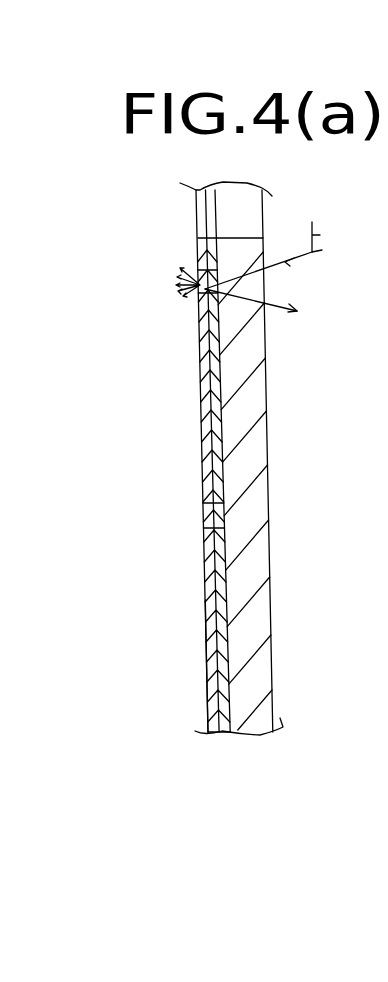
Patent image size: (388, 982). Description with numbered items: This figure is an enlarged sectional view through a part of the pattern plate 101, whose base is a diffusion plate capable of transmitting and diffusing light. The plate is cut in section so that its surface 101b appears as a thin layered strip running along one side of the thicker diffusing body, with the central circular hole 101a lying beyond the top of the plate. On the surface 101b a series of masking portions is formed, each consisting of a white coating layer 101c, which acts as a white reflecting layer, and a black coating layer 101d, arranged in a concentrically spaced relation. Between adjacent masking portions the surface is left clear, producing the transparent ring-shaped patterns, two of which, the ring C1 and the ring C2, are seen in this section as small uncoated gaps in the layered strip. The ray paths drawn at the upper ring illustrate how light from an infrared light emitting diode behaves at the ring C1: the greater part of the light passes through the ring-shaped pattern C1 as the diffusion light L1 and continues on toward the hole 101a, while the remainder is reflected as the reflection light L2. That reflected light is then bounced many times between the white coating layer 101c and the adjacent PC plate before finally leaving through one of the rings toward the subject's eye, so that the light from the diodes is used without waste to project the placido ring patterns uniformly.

The pattern plate 101 is at (260, 452).
The circular hole 101a is at (242, 237).
The surface of the pattern plate 101b is at (205, 592).
The white coating layer 101c is at (222, 733).
The black coating layer 101d is at (205, 686).
The transparent ring-shaped pattern C1 is at (178, 270).
The transparent ring-shaped pattern C2 is at (203, 515).
The diffusion light L1 is at (190, 297).
The reflection light L2 is at (281, 306).